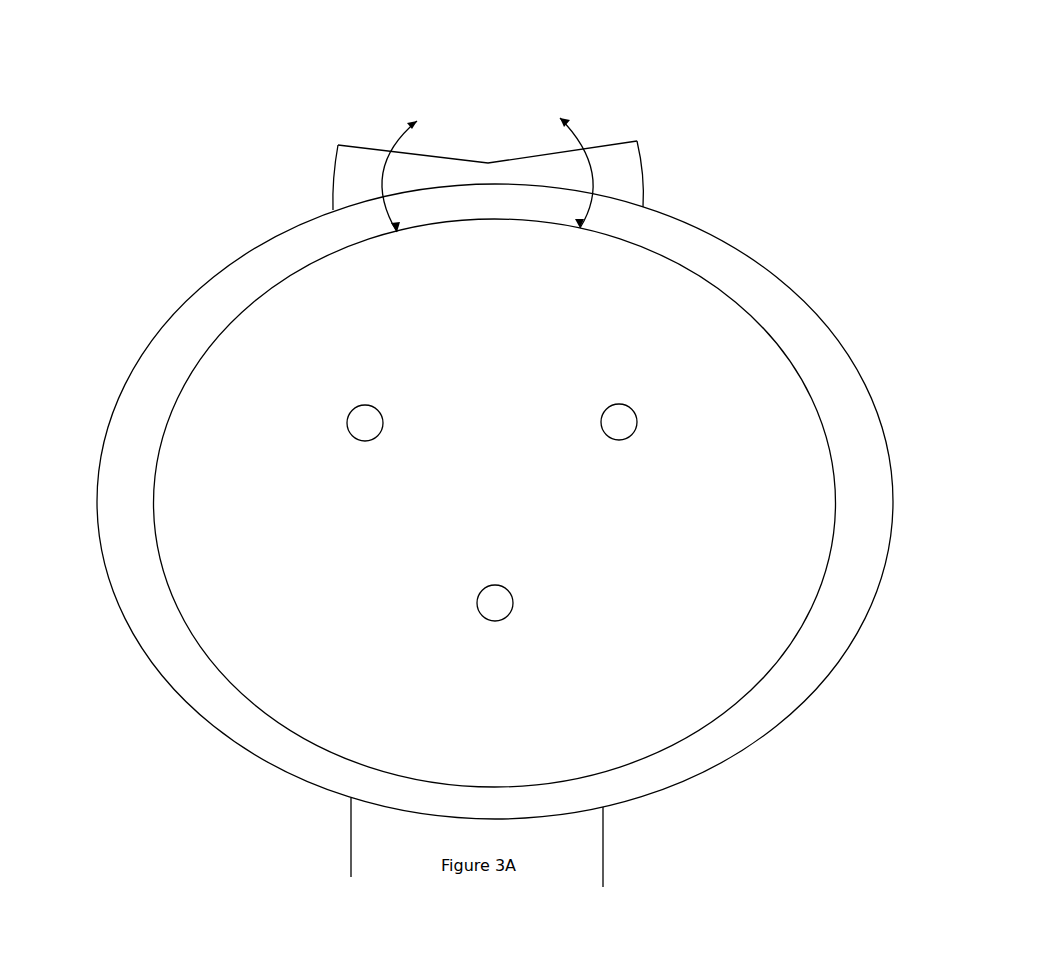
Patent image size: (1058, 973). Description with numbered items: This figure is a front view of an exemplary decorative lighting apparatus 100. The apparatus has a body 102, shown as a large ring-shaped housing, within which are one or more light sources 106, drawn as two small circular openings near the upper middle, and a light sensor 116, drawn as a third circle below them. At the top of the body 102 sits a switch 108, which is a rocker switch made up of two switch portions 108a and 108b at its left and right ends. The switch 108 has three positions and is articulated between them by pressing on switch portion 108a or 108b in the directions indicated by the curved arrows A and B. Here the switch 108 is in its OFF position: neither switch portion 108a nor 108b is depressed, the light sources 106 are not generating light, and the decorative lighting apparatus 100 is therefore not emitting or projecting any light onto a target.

The decorative lighting apparatus 100 is at (789, 70).
The body 102 is at (198, 272).
The light sources 106 is at (618, 422).
The switch 108 is at (458, 147).
The switch portion 108a is at (345, 138).
The switch portion 108b is at (627, 128).
The light sensor 116 is at (487, 603).